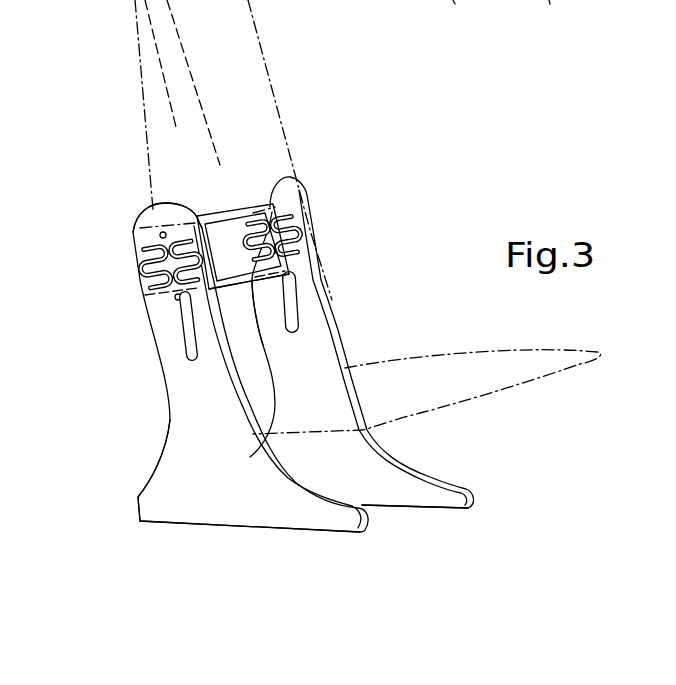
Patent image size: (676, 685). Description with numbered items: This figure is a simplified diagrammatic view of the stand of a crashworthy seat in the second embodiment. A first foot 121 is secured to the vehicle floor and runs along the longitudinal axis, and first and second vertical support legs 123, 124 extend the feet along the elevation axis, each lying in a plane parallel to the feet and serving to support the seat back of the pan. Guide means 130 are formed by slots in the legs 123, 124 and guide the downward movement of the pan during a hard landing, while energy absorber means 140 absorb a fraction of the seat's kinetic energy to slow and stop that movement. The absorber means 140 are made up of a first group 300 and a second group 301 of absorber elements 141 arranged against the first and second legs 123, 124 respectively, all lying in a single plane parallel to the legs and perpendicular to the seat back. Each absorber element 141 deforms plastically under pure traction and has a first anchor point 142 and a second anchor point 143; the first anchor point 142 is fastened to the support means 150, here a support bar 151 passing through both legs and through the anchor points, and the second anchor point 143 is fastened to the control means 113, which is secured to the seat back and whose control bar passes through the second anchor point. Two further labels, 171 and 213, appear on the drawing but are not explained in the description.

The control means 113 is at (236, 355).
The first foot 121 is at (317, 295).
The first vertical support leg 123 is at (427, 388).
The second vertical support leg 124 is at (129, 469).
The guide means 130 is at (272, 354).
The energy absorber means 140 is at (242, 233).
The absorber element 141 is at (202, 209).
The first anchor point 142 is at (136, 183).
The second anchor point 143 is at (247, 301).
The support means 150 is at (239, 173).
The support bar 151 is at (243, 196).
The connector 171 is at (554, 15).
The rear edge 213 is at (292, 346).
The first group of absorber elements 300 is at (323, 150).
The second group of absorber elements 301 is at (97, 146).